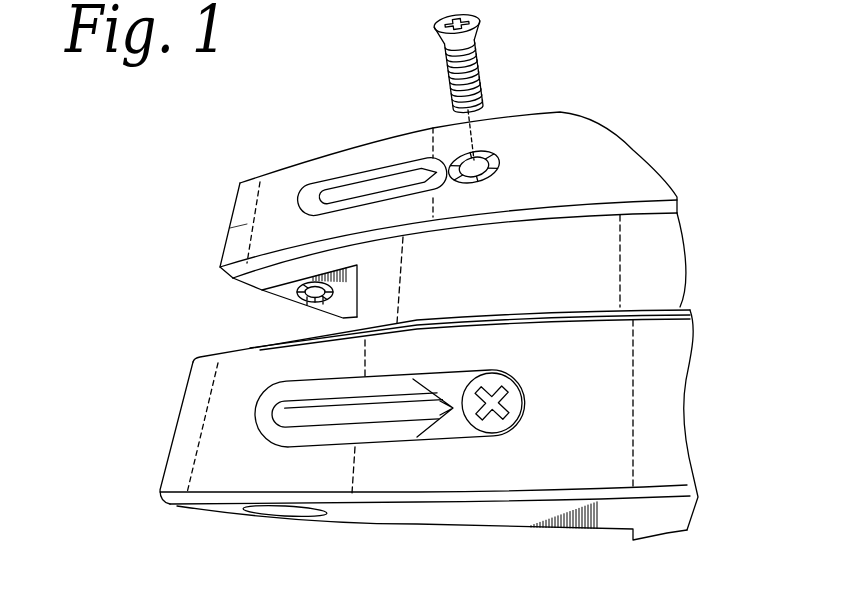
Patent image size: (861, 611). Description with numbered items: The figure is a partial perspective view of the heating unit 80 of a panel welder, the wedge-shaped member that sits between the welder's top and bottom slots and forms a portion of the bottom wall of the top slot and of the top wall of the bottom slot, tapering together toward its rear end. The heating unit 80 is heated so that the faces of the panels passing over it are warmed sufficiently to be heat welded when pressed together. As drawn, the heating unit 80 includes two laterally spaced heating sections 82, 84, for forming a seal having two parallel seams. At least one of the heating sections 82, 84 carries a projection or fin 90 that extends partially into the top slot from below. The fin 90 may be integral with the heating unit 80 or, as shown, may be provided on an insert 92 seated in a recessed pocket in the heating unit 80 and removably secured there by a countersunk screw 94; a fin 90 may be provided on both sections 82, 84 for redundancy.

The heating unit 80 is at (410, 286).
The heating section 82 is at (181, 445).
The heating section 84 is at (570, 131).
The fin 90 is at (367, 183).
The insert 92 is at (230, 228).
The countersunk screw 94 is at (478, 68).